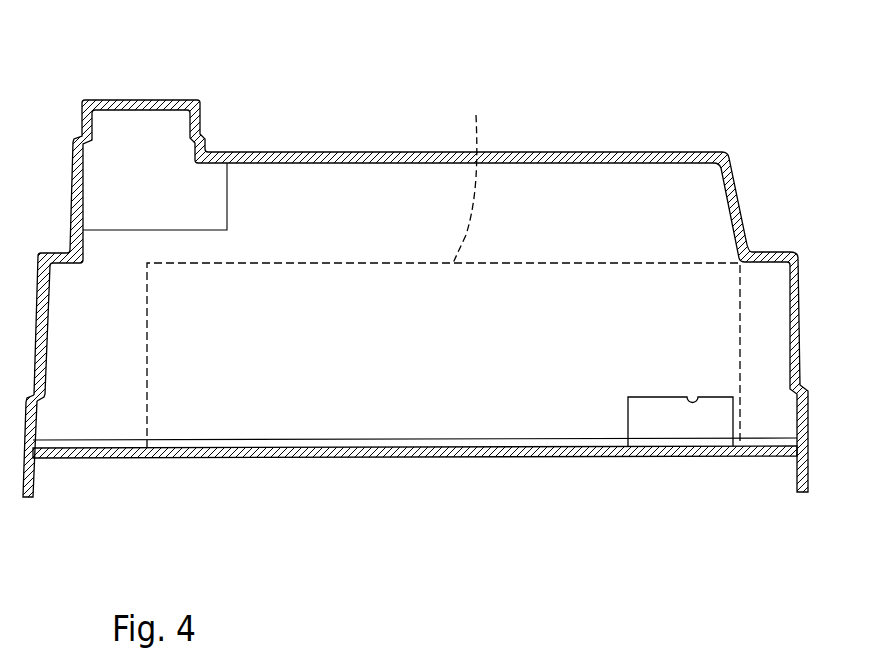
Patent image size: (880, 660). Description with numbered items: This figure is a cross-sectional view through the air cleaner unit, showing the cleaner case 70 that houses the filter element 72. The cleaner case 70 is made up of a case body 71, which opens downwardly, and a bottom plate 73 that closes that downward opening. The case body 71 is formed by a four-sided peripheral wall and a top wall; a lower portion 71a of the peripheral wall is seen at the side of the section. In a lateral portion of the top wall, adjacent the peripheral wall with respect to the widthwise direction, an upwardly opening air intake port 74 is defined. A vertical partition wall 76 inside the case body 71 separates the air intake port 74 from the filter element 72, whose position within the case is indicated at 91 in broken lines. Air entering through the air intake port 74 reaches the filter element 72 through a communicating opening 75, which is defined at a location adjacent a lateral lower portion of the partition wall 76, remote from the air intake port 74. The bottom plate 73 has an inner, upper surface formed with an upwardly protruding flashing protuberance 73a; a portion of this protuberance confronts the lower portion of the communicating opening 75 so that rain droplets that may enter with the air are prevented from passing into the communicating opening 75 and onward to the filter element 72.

The cleaner case 70 is at (675, 146).
The case body 71 is at (558, 150).
The lower flange of side wall 71a is at (35, 475).
The filter element 72 is at (471, 174).
The bottom plate 73 is at (300, 458).
The flashing protuberance 73a is at (705, 433).
The air intake port 74 is at (190, 117).
The communicating opening 75 is at (703, 398).
The partition wall 76 is at (353, 188).
The accommodated component (dashed) 91 is at (427, 354).